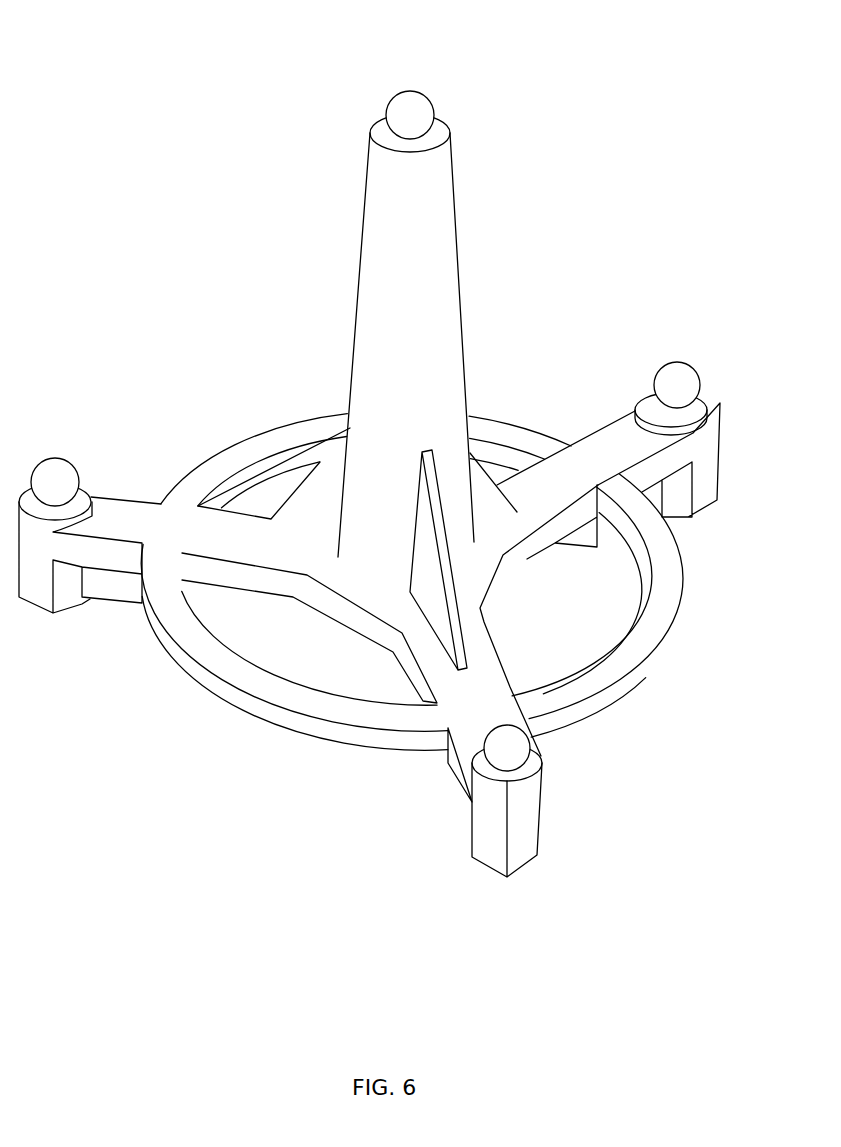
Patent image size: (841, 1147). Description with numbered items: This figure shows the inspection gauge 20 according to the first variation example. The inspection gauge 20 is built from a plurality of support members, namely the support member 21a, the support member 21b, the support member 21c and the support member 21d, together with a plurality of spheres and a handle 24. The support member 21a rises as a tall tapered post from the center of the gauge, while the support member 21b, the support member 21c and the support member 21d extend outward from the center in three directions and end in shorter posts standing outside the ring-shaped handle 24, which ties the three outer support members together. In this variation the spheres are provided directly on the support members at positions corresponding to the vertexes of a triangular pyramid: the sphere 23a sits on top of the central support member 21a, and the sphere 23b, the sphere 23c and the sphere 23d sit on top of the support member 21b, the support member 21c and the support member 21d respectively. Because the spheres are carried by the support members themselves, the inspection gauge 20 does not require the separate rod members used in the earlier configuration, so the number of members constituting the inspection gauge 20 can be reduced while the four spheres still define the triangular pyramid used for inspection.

The inspection gauge 20 is at (155, 93).
The support member 21a is at (453, 173).
The support member 21b is at (120, 497).
The support member 21c is at (537, 743).
The support member 21d is at (605, 417).
The sphere 23a is at (433, 97).
The sphere 23b is at (72, 463).
The sphere 23c is at (490, 766).
The sphere 23d is at (678, 363).
The handle 24 is at (230, 702).